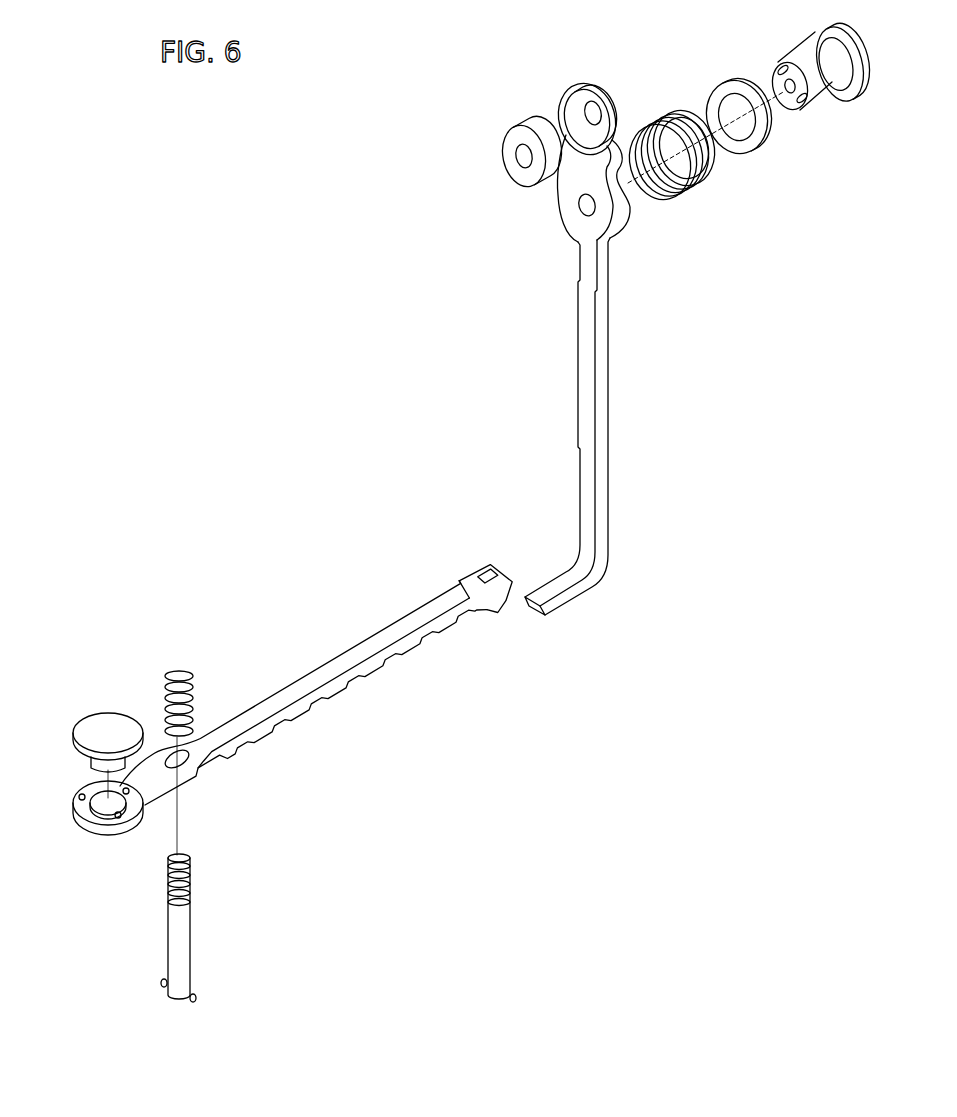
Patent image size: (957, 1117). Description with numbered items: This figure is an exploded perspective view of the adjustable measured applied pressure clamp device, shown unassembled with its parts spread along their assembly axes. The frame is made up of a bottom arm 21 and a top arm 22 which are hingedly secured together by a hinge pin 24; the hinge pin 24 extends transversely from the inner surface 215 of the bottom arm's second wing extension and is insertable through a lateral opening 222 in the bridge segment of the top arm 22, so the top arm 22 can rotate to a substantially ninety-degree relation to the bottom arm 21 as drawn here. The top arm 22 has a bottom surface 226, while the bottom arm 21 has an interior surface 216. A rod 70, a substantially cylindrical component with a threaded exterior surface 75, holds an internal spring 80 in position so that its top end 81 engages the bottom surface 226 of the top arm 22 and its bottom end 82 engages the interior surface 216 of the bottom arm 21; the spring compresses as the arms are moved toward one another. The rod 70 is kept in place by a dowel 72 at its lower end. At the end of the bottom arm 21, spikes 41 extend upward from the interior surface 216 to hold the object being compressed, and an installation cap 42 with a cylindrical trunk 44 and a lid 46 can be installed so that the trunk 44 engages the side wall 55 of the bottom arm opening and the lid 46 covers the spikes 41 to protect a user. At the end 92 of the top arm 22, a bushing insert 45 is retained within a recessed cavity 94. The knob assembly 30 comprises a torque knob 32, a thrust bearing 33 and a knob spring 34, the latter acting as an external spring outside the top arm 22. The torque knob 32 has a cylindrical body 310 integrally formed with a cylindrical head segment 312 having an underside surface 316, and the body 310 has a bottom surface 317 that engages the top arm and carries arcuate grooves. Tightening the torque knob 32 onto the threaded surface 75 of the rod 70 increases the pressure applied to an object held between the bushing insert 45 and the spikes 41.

The bottom arm 21 is at (345, 658).
The inner surface of the second wing extension 215 is at (515, 562).
The interior surface of the bottom arm 216 is at (338, 658).
The hinge pin 24 is at (512, 583).
The top arm 22 is at (577, 448).
The lateral opening 222 is at (542, 607).
The bottom surface of the top arm 226 is at (588, 341).
The end of the top arm 92 is at (602, 124).
The recessed cavity 94 is at (604, 122).
The bushing insert 45 is at (524, 122).
The knob assembly 30 is at (767, 131).
The torque knob 32 is at (808, 75).
The body of the torque knob 310 is at (786, 75).
The head segment of the torque knob 312 is at (857, 77).
The underside surface of the head segment 316 is at (803, 40).
The bottom surface of the torque knob body 317 is at (780, 78).
The thrust bearing 33 is at (758, 152).
The knob spring 34 is at (682, 152).
The internal spring 80 is at (198, 675).
The top end of the internal spring 81 is at (177, 663).
The bottom end of the internal spring 82 is at (190, 735).
The installation cap 42 is at (83, 758).
The lid 46 is at (85, 735).
The trunk 44 is at (92, 763).
The spikes 41 is at (104, 832).
The side wall of the bottom arm 55 is at (100, 805).
The rod 70 is at (217, 949).
The threaded exterior surface 75 is at (192, 880).
The dowel 72 is at (197, 1002).